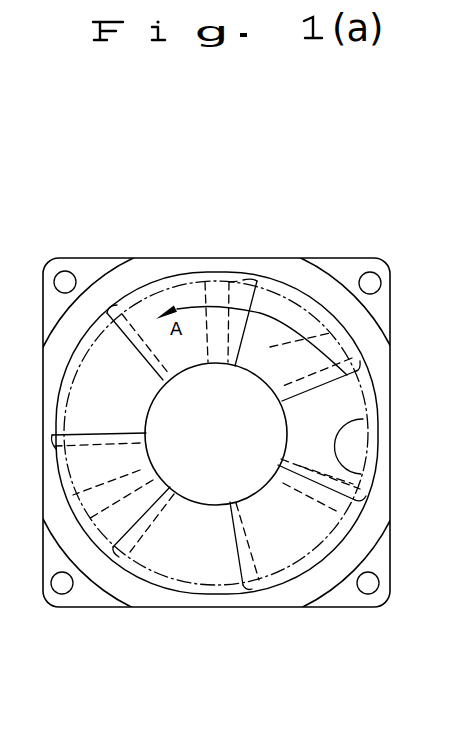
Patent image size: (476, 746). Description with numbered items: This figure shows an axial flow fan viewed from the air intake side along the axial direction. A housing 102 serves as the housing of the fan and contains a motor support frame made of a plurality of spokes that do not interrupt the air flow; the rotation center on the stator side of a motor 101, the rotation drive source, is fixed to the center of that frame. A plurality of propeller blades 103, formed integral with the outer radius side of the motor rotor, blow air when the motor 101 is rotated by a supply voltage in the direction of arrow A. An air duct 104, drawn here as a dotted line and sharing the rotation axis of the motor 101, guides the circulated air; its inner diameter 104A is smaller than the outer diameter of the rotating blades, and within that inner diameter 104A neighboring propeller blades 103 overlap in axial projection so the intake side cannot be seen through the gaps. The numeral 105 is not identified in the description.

The motor 101 is at (213, 442).
The housing 102 is at (341, 272).
The propeller blades 103 is at (342, 410).
The air duct 104 is at (346, 477).
The inner diameter of the air duct 104A is at (195, 586).
The unlabeled element (cut off) 105 is at (470, 500).